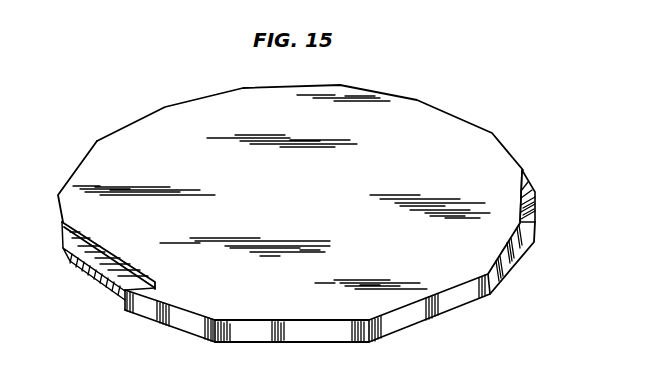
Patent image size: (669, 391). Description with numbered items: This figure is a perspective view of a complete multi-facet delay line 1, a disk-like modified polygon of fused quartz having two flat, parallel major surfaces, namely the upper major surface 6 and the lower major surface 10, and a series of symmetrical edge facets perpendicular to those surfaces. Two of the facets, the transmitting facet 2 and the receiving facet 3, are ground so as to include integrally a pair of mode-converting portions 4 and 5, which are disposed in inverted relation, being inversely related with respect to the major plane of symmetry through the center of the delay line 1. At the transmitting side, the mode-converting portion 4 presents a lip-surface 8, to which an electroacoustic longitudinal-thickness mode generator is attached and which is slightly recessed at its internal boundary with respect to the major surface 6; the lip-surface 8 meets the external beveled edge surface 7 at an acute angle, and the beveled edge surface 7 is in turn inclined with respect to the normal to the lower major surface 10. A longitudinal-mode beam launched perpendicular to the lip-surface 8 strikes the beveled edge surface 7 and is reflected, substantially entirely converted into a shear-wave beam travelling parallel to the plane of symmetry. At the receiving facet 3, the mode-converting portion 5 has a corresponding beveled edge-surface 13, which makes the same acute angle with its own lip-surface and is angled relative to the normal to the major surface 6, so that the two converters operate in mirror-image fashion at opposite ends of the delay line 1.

The multi-facet delay line 1 is at (203, 105).
The transmitting facet 2 is at (104, 252).
The receiving facet 3 is at (520, 176).
The mode-converting portion 4 is at (73, 230).
The mode-converting portion 5 is at (518, 198).
The major surface 6 is at (103, 172).
The external beveled edge surface 7 is at (90, 277).
The lip-surface 8 is at (75, 243).
The lower major surface 10 is at (167, 327).
The beveled edge-surface 13 is at (537, 197).